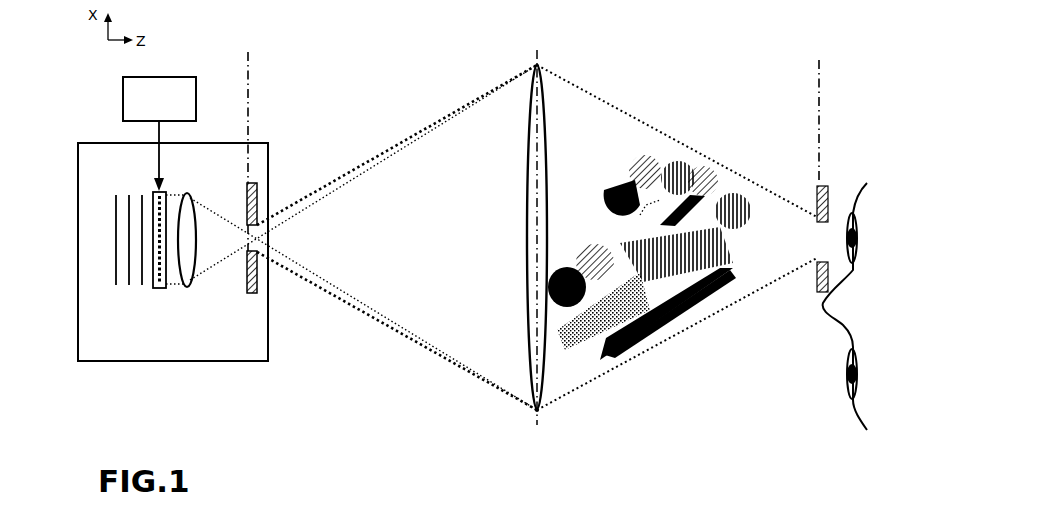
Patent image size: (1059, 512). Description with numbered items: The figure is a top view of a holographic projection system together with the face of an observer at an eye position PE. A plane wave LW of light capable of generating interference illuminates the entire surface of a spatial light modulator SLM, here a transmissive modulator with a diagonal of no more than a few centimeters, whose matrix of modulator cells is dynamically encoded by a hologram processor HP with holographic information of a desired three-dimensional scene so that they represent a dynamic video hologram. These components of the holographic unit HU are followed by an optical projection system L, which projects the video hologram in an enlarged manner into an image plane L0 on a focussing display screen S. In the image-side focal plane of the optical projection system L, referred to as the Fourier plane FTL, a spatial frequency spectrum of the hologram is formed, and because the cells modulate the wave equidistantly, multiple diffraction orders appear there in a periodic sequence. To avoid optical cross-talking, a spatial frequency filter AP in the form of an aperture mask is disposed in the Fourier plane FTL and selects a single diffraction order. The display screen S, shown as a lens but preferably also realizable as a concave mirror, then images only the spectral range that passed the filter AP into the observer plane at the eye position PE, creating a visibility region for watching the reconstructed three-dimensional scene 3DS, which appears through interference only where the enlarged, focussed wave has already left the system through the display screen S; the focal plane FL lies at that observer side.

The hologram processor HP is at (159, 134).
The holographic unit HU is at (223, 345).
The plane wave LW is at (128, 207).
The spatial light modulator SLM is at (160, 289).
The optical projection system L is at (189, 258).
The spatial frequency filter AP is at (233, 229).
The Fourier plane FTL is at (271, 150).
The image plane L0 is at (545, 236).
The focussing display screen S is at (517, 427).
The three-dimensional scene 3DS is at (708, 168).
The Fourier plane / focal plane FL is at (836, 116).
The eye position PE is at (812, 239).